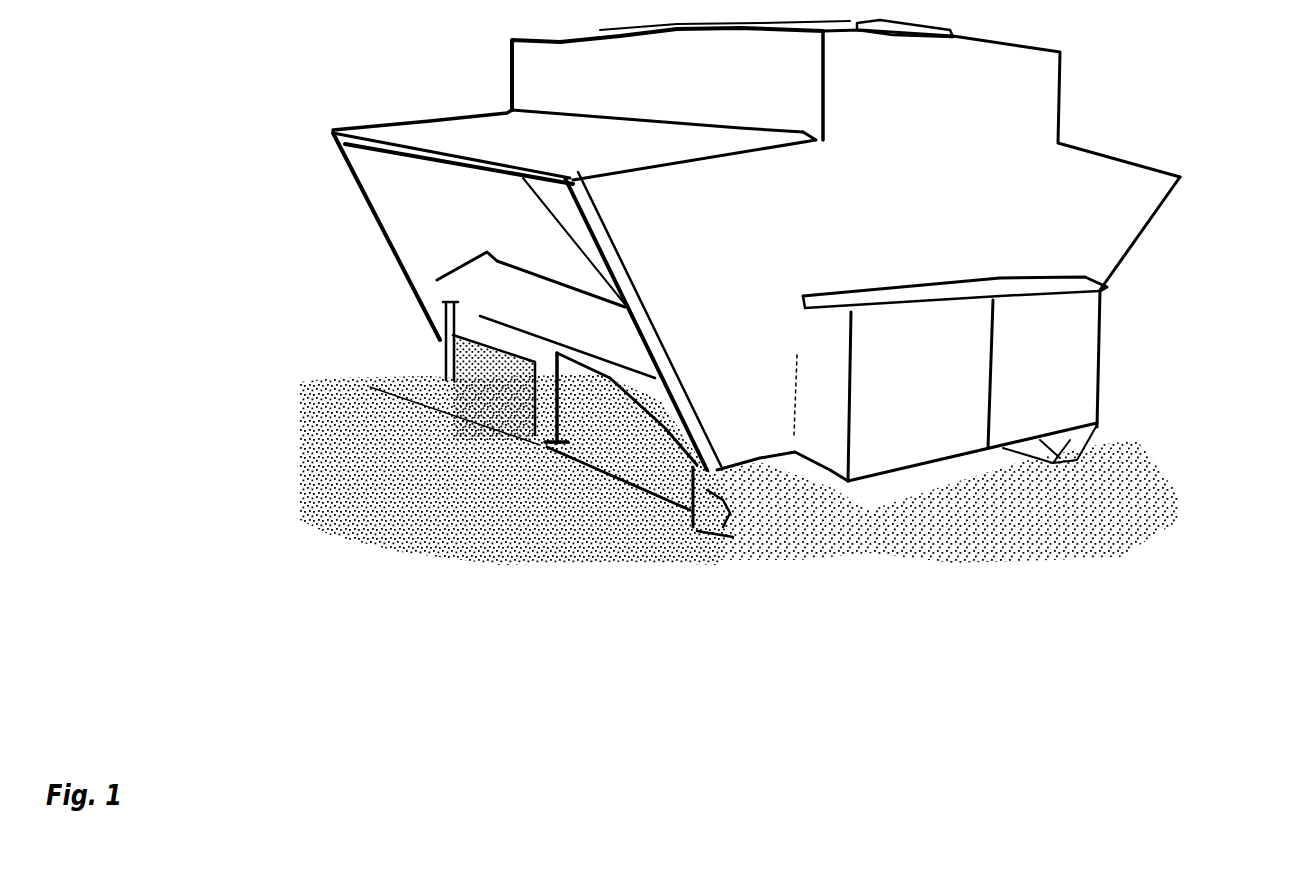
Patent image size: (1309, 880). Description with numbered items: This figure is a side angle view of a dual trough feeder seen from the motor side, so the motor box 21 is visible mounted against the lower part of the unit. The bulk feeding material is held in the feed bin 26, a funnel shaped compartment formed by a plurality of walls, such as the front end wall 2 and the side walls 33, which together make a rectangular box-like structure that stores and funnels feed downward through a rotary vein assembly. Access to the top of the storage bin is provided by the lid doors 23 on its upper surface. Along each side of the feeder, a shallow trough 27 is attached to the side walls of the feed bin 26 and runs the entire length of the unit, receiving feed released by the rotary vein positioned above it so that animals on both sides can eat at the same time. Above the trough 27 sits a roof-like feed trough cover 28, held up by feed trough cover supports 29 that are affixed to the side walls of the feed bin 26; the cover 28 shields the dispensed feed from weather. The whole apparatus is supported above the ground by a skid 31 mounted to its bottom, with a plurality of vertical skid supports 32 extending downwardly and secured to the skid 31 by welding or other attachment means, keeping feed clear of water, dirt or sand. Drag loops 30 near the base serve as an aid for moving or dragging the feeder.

The front end wall 2 is at (1017, 142).
The motor box 21 is at (1015, 370).
The lid doors 23 is at (918, 20).
The feed bin 26 is at (935, 197).
The trough 27 is at (522, 295).
The feed trough cover 28 is at (522, 133).
The feed trough cover supports 29 is at (573, 237).
The drag loops 30 is at (715, 516).
The skid 31 is at (590, 477).
The vertical skid supports 32 is at (547, 403).
The side walls 33 is at (655, 78).